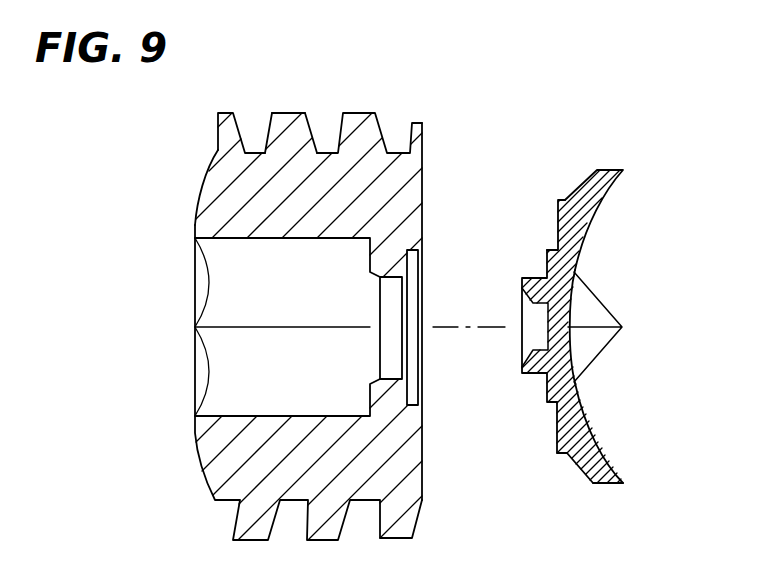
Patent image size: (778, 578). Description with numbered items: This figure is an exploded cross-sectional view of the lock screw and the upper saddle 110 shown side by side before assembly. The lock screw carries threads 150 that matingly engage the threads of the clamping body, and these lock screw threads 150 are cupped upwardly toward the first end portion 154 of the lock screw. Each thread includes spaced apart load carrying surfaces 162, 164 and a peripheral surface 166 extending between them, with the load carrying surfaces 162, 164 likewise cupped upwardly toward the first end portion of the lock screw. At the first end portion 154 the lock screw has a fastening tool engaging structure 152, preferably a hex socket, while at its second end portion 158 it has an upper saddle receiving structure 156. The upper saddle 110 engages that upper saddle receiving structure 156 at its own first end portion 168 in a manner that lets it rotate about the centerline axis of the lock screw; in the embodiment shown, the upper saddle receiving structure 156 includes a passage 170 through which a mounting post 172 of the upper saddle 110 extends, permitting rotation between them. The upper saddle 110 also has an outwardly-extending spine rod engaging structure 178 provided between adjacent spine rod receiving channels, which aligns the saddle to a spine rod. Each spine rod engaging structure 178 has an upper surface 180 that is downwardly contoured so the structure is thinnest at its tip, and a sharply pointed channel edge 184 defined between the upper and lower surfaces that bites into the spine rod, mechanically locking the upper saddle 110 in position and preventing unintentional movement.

The upper saddle 110 is at (600, 278).
The lock screw threads 150 is at (288, 112).
The fastening tool engaging structure 152 is at (207, 359).
The first end portion 154 is at (199, 203).
The upper saddle receiving structure 156 is at (413, 302).
The second end portion 158 is at (418, 225).
The load carrying surface 162 is at (272, 142).
The load carrying surface 164 is at (313, 145).
The peripheral surface 166 is at (277, 113).
The first end portion 168 is at (549, 252).
The passage 170 is at (392, 282).
The mounting post 172 is at (524, 372).
The spine rod engaging structure 178 is at (612, 180).
The upper surface 180 is at (581, 462).
The channel edge 184 is at (598, 360).